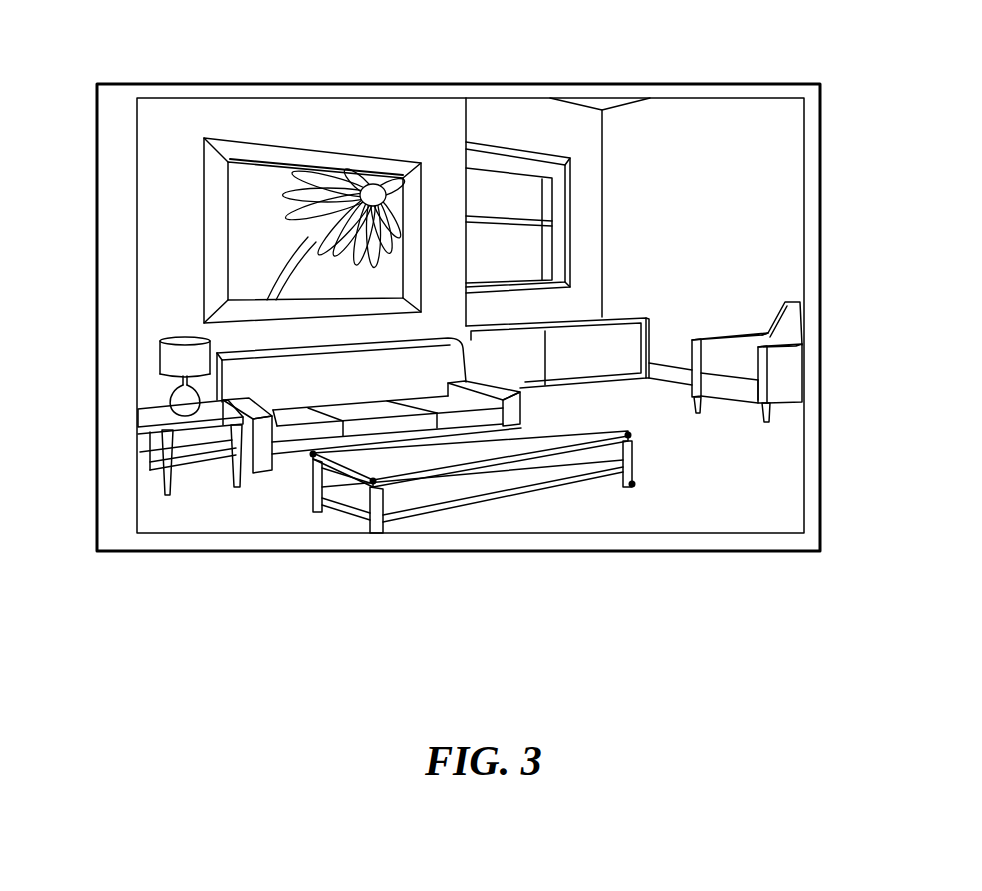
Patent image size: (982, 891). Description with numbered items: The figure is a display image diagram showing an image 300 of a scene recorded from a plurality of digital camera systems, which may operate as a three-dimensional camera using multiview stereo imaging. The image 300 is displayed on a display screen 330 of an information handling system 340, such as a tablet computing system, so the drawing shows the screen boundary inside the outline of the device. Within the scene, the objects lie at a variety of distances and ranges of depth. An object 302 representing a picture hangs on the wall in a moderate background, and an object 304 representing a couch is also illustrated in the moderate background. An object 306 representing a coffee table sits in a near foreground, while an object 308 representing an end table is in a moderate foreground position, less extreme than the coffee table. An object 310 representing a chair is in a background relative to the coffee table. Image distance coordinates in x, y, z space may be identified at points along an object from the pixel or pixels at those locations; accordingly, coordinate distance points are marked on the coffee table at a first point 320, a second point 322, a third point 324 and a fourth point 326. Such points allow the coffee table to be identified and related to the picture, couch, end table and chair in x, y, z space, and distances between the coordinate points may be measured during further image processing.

The image 300 is at (608, 63).
The object (picture) 302 is at (273, 157).
The object (couch) 304 is at (478, 390).
The object (coffee table) 306 is at (493, 437).
The object (end table) 308 is at (162, 415).
The object (chair) 310 is at (707, 340).
The coordinate distance point (X1, Y1, Z1) 320 is at (313, 456).
The coordinate distance point (X2, Y2, Z2) 322 is at (373, 483).
The coordinate distance point (X3, Y3, Z3) 324 is at (630, 434).
The coordinate distance point (X4, Y4, Z4) 326 is at (632, 486).
The display screen 330 is at (717, 98).
The information handling system 340 is at (97, 210).